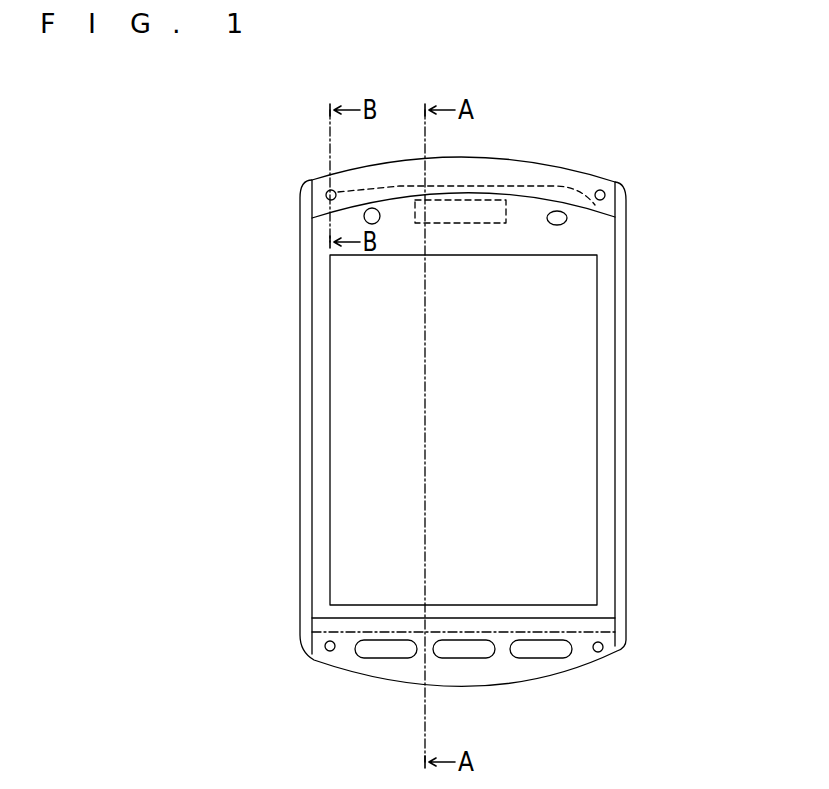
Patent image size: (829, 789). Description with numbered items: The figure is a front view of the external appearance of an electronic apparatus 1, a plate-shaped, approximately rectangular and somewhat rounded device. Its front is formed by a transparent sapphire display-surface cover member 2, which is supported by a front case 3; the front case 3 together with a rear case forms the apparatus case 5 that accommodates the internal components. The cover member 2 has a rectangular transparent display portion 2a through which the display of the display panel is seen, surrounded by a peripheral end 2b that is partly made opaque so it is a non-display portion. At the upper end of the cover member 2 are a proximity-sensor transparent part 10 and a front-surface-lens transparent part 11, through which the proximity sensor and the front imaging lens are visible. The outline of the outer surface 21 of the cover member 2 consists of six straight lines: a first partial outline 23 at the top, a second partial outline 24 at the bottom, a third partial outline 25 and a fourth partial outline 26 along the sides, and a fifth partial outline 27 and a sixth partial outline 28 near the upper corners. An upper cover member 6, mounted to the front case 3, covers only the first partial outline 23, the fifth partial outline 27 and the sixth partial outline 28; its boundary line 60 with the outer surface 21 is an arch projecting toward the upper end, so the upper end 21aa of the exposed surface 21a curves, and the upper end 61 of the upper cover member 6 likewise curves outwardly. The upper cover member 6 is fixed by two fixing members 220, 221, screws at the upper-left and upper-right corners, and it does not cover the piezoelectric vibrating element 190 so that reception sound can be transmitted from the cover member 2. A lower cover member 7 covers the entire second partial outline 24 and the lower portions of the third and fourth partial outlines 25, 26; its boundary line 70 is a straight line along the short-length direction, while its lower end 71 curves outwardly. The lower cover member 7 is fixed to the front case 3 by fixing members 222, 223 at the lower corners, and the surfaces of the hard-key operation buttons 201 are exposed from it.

The electronic apparatus 1 is at (597, 100).
The display-surface cover member 2 is at (588, 367).
The display portion 2a is at (577, 412).
The peripheral end 2b is at (605, 521).
The front case 3 is at (622, 300).
The apparatus case 5 is at (642, 262).
The upper cover member 6 is at (490, 163).
The lower cover member 7 is at (345, 658).
The proximity-sensor transparent part 10 is at (557, 226).
The front-surface-lens transparent part 11 is at (380, 222).
The outer surface 21 is at (577, 482).
The exposed surface 21a is at (577, 444).
The upper end of the exposed surface 21aa is at (618, 228).
The first partial outline 23 is at (537, 185).
The second partial outline 24 is at (580, 633).
The third partial outline 25 is at (310, 548).
The fourth partial outline 26 is at (615, 572).
The fifth partial outline 27 is at (348, 192).
The sixth partial outline 28 is at (578, 190).
The boundary line 60 is at (530, 198).
The upper end of the upper cover member 61 is at (518, 162).
The boundary line 70 is at (545, 620).
The lower end of the lower cover member 71 is at (497, 683).
The piezoelectric vibrating element 190 is at (472, 224).
The operation button 201 is at (387, 650).
The fixing member 220 is at (325, 195).
The fixing member 221 is at (604, 190).
The fixing member 222 is at (328, 651).
The fixing member 223 is at (602, 652).